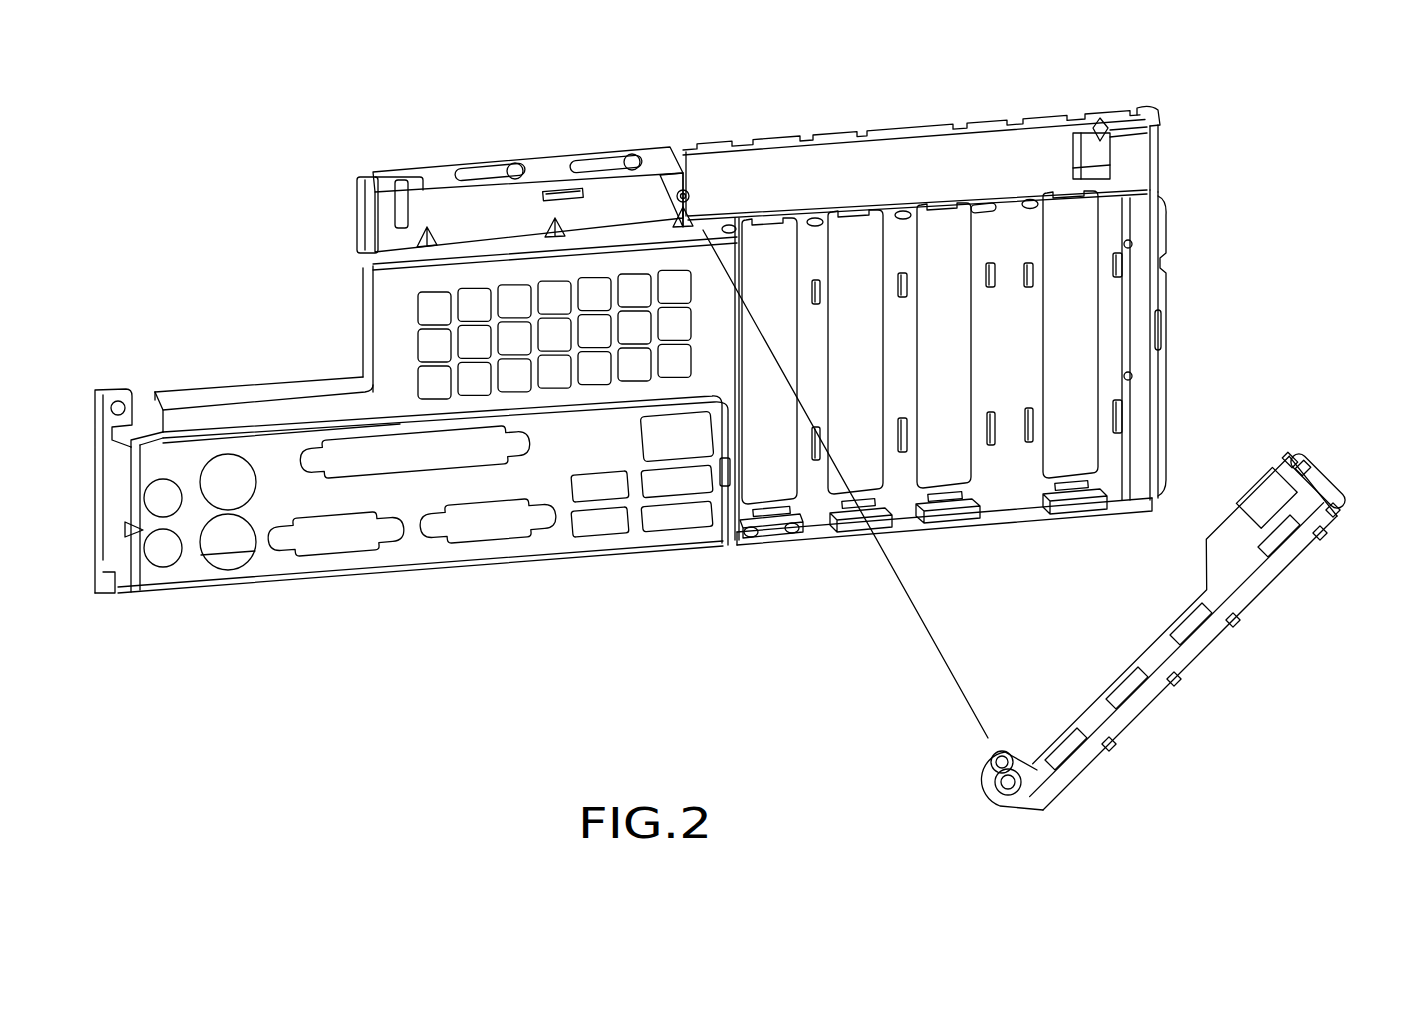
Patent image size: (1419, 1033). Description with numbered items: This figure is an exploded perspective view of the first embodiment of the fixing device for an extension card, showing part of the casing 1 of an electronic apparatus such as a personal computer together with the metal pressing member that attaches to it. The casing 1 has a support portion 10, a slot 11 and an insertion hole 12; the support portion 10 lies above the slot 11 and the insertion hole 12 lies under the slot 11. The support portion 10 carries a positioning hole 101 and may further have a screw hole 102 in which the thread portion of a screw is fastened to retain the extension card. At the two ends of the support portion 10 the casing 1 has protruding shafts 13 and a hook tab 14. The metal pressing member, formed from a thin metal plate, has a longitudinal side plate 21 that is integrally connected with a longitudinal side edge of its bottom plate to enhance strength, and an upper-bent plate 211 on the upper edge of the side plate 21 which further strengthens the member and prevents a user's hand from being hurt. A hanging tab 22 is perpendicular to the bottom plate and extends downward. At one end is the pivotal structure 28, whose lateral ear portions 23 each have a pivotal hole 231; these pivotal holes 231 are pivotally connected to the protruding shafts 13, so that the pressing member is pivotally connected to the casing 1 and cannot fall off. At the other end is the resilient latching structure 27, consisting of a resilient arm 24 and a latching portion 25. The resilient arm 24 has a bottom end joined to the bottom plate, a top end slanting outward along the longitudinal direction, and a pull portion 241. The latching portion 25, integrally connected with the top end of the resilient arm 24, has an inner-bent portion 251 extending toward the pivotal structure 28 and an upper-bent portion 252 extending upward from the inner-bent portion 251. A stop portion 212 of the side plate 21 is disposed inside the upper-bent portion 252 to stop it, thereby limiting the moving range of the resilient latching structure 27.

The casing 1 is at (527, 582).
The support portion 10 is at (1000, 195).
The positioning hole 101 is at (982, 204).
The screw hole 102 is at (1030, 199).
The slot 11 is at (1090, 290).
The insertion hole 12 is at (1095, 488).
The protruding shaft 13 is at (690, 198).
The hook tab 14 is at (1150, 122).
The longitudinal side plate 21 is at (1250, 584).
The upper-bent plate 211 is at (1180, 617).
The stop portion 212 is at (1262, 495).
The hanging tab 22 is at (1322, 542).
The lateral ear portion 23 is at (1022, 792).
The pivotal hole 231 is at (1010, 769).
The resilient arm 24 is at (1330, 482).
The pull portion 241 is at (1337, 512).
The latching portion 25 is at (1310, 367).
The inner-bent portion 251 is at (1307, 464).
The upper-bent portion 252 is at (1290, 456).
The resilient latching structure 27 is at (1375, 447).
The pivotal structure 28 is at (977, 759).